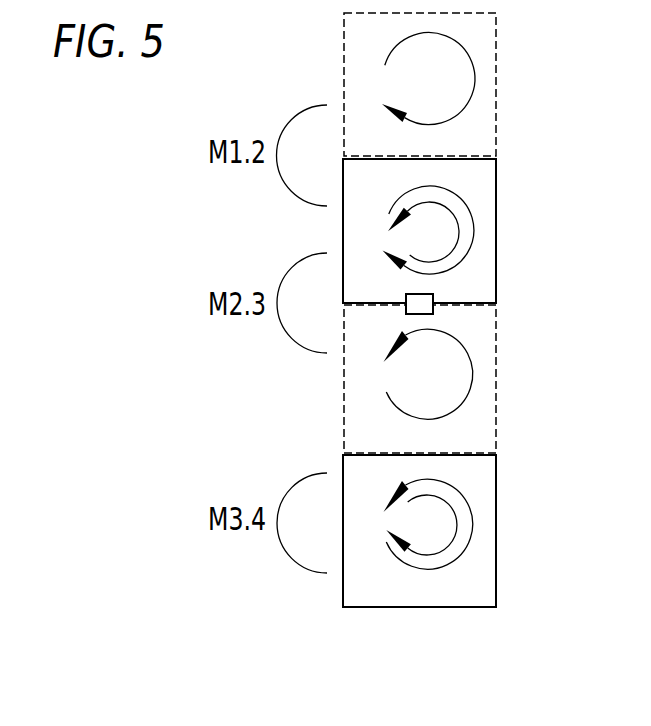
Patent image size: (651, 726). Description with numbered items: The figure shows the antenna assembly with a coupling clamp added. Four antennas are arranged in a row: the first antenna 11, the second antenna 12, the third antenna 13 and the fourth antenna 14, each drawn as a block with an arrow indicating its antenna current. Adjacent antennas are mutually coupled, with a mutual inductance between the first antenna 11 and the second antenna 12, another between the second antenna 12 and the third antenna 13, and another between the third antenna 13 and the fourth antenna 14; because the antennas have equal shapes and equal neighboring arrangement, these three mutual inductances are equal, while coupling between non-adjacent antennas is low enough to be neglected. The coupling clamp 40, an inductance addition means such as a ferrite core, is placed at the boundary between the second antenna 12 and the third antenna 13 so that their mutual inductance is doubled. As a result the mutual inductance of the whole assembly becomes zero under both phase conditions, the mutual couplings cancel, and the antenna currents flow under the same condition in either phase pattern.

The first antenna 11 is at (496, 53).
The second antenna 12 is at (496, 208).
The third antenna 13 is at (496, 382).
The fourth antenna 14 is at (496, 535).
The coupling clamp 40 is at (433, 302).